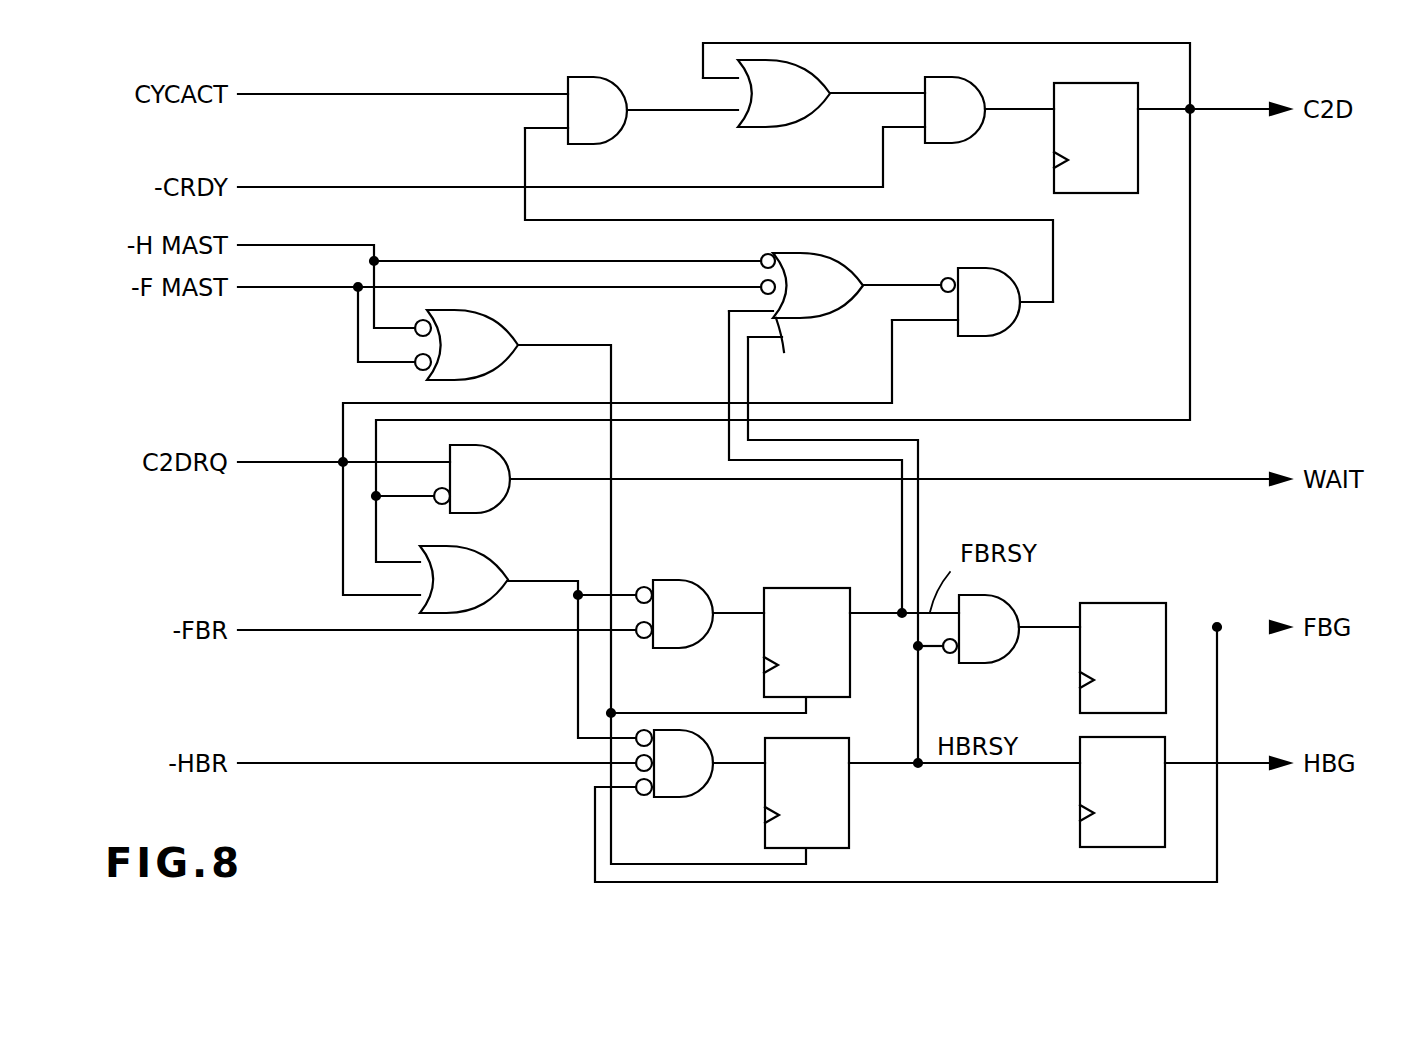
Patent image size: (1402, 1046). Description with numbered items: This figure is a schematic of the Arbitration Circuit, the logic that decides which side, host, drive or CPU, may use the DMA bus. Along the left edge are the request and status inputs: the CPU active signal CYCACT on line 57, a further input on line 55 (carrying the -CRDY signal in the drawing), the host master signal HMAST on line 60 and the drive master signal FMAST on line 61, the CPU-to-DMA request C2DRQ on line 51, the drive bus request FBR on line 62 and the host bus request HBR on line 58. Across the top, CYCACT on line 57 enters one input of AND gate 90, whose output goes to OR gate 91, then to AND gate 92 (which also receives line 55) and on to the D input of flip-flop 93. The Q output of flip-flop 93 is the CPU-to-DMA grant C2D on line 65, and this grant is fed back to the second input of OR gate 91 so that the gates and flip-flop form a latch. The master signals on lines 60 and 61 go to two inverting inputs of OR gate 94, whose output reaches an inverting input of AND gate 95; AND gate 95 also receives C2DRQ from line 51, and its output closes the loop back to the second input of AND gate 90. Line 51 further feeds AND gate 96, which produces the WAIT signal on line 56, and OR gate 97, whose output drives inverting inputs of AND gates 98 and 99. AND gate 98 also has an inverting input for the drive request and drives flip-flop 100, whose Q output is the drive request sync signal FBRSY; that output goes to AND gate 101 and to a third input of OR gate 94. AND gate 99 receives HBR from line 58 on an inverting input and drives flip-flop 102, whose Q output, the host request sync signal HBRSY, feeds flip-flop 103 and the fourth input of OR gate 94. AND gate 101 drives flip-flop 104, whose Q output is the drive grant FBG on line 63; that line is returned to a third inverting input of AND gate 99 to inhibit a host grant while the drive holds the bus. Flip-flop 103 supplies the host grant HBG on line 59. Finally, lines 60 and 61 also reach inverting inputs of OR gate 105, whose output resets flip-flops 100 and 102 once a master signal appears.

The line 51 is at (293, 462).
The -CRDY signal line 55 is at (358, 187).
The line 56 is at (1095, 479).
The line 57 is at (270, 94).
The line 58 is at (440, 763).
The line 59 is at (1245, 763).
The line 60 is at (298, 245).
The line 61 is at (303, 287).
The line 62 is at (350, 630).
The line 63 is at (1250, 630).
The line 65 is at (1218, 109).
The AND gate 90 is at (610, 88).
The OR gate 91 is at (780, 130).
The AND gate 92 is at (967, 88).
The flip-flop 93 is at (1054, 143).
The OR gate 94 is at (805, 318).
The AND gate 95 is at (997, 325).
The AND gate 96 is at (500, 500).
The OR gate 97 is at (487, 572).
The AND gate 98 is at (675, 582).
The AND gate 99 is at (685, 797).
The flip-flop 100 is at (803, 588).
The AND gate 101 is at (1000, 663).
The flip-flop 102 is at (849, 800).
The flip-flop 103 is at (1080, 790).
The flip-flop 104 is at (1115, 603).
The OR gate 105 is at (500, 330).